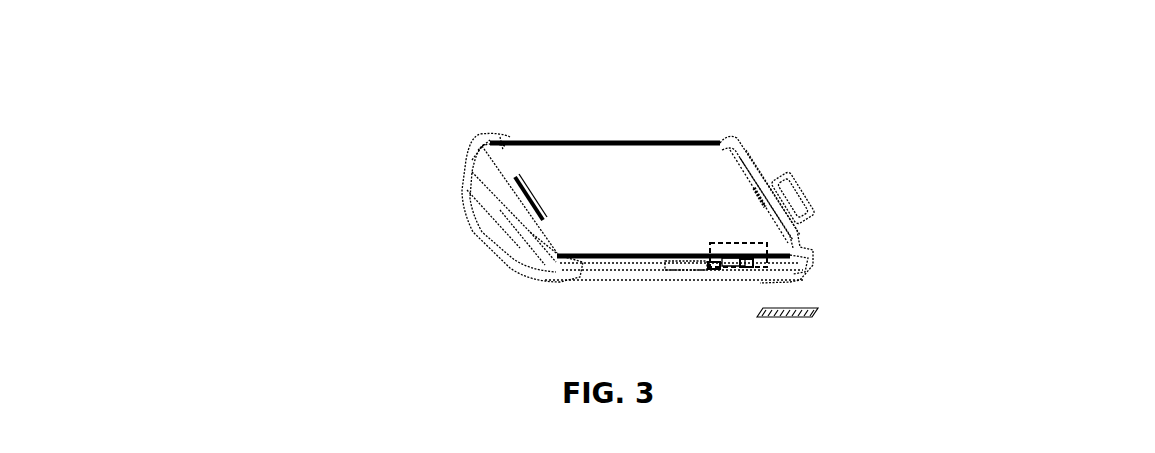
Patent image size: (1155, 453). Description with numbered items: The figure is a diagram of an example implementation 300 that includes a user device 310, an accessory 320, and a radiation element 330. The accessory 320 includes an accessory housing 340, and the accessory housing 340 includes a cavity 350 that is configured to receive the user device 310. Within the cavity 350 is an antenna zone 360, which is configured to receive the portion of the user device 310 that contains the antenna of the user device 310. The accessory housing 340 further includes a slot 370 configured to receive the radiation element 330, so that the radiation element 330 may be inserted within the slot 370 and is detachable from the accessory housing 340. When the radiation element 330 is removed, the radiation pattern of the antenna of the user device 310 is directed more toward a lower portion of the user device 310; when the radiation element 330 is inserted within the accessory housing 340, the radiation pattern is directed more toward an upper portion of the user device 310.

The example implementation 300 is at (176, 60).
The user device 310 is at (596, 168).
The accessory 320 is at (470, 283).
The radiation element 330 is at (793, 318).
The accessory housing 340 is at (760, 167).
The cavity 350 is at (662, 181).
The antenna zone 360 is at (797, 247).
The slot 370 is at (797, 262).